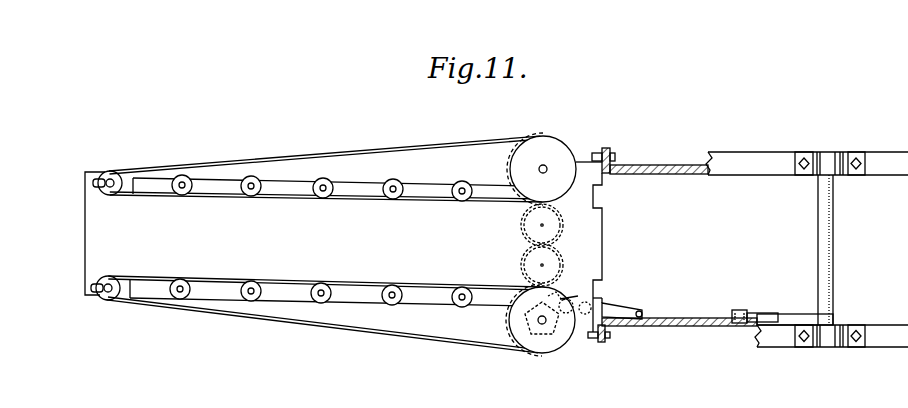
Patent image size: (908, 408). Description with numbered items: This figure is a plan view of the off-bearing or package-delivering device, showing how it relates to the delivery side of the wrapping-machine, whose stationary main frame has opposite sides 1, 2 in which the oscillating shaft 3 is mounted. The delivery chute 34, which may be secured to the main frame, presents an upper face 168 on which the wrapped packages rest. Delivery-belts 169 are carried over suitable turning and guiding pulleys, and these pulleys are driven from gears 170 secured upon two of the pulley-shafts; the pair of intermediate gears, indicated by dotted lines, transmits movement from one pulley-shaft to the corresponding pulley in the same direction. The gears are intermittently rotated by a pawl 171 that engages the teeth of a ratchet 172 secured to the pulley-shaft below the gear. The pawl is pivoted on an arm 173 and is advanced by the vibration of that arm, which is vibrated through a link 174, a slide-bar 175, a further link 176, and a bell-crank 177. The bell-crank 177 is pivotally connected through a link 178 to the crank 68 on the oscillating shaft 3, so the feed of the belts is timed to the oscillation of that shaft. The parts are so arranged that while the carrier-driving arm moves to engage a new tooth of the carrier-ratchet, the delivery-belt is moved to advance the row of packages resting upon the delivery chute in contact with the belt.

The side of the stationary main frame 1 is at (807, 257).
The side of the stationary main frame 2 is at (678, 154).
The oscillating shaft 3 is at (836, 288).
The delivery chute 34 is at (317, 237).
The crank 68 is at (791, 314).
The upper face of the delivery chute 168 is at (185, 233).
The delivery-belts 169 is at (431, 197).
The gears 170 is at (518, 145).
The pawl 171 is at (562, 298).
The ratchet 172 is at (543, 335).
The arm 173 is at (572, 316).
The link 174 is at (615, 307).
The slide-bar 175 is at (662, 318).
The link 176 is at (733, 311).
The bell-crank 177 is at (756, 313).
The link 178 is at (522, 229).